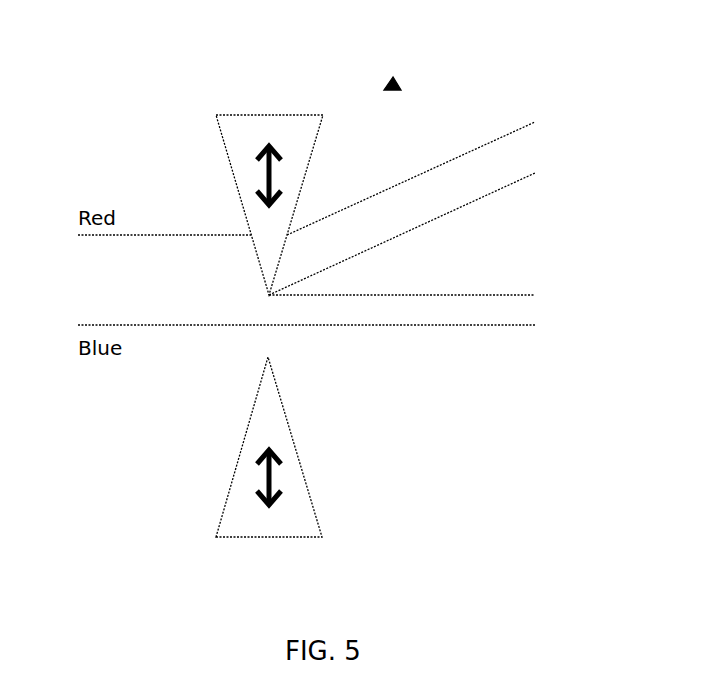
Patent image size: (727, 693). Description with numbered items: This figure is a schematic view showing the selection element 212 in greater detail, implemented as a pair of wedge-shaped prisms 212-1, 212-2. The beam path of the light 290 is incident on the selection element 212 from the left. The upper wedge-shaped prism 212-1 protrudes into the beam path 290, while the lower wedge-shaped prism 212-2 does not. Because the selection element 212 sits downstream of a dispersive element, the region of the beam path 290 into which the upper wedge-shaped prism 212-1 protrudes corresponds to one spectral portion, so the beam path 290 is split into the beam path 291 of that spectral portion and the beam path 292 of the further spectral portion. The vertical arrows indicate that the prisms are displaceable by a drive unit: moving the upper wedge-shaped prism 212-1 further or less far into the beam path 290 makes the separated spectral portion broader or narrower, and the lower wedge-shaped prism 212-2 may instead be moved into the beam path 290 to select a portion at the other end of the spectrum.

The selection element 212 is at (396, 79).
The upper wedge-shaped prism 212-1 is at (298, 112).
The lower wedge-shaped prism 212-2 is at (283, 540).
The beam path of the light 290 is at (158, 233).
The beam path of the spectral portion 291 is at (492, 141).
The beam path of the further spectral portion 292 is at (450, 295).